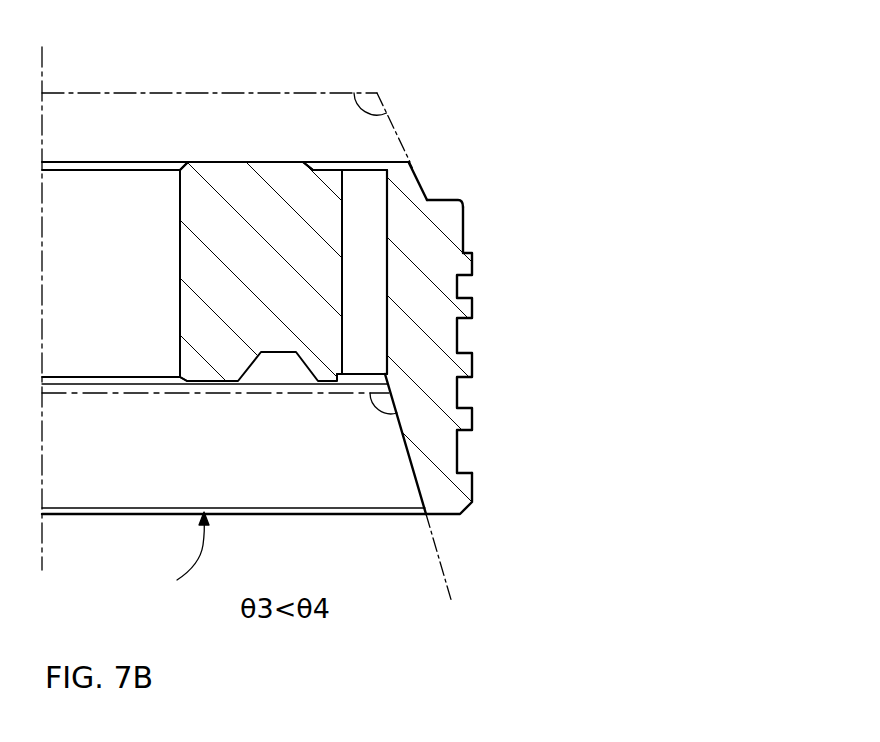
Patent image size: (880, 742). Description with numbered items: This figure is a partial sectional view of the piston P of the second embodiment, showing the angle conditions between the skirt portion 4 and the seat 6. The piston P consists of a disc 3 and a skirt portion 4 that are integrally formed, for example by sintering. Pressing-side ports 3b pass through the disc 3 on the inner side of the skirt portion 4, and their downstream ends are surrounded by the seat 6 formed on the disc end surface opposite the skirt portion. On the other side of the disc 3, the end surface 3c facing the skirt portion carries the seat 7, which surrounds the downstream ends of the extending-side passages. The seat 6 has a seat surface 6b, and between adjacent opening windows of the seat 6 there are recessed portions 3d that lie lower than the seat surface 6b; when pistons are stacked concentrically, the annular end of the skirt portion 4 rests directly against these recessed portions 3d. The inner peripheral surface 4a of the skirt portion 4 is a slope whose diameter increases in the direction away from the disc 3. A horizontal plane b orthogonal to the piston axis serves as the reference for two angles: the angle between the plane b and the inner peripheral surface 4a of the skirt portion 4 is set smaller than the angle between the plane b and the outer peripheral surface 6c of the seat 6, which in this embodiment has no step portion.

The horizontal plane b is at (168, 94).
The seat 6 is at (228, 162).
The seat surface 6b is at (408, 161).
The outer peripheral surface 6c is at (418, 177).
The disc 3 is at (453, 232).
The pressing-side ports 3b is at (357, 350).
The end surface 3c is at (161, 385).
The recessed portions 3d is at (441, 199).
The seat 7 is at (223, 382).
The skirt portion 4 is at (460, 490).
The inner peripheral surface 4a is at (411, 468).
The piston P is at (183, 550).